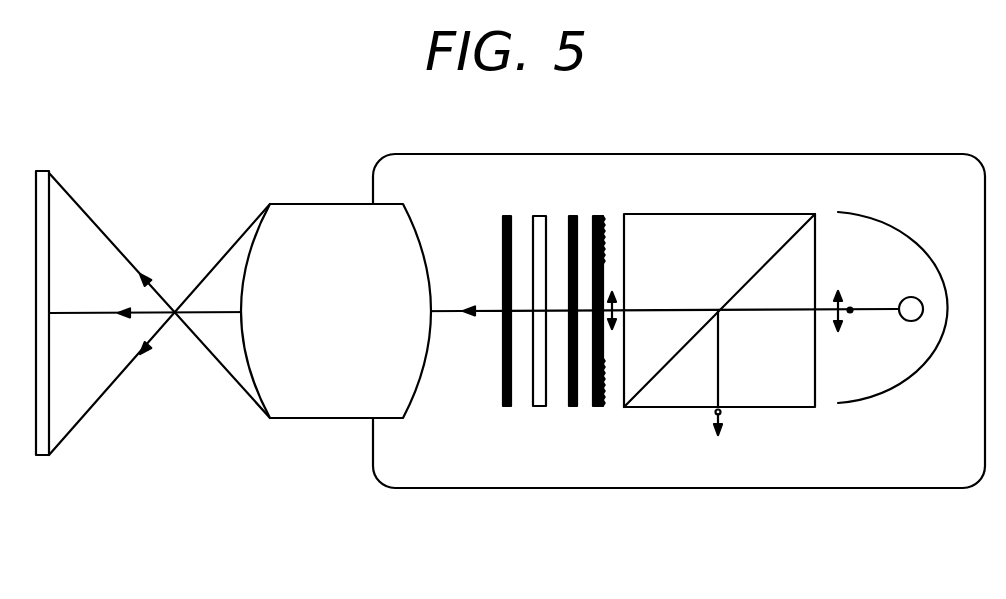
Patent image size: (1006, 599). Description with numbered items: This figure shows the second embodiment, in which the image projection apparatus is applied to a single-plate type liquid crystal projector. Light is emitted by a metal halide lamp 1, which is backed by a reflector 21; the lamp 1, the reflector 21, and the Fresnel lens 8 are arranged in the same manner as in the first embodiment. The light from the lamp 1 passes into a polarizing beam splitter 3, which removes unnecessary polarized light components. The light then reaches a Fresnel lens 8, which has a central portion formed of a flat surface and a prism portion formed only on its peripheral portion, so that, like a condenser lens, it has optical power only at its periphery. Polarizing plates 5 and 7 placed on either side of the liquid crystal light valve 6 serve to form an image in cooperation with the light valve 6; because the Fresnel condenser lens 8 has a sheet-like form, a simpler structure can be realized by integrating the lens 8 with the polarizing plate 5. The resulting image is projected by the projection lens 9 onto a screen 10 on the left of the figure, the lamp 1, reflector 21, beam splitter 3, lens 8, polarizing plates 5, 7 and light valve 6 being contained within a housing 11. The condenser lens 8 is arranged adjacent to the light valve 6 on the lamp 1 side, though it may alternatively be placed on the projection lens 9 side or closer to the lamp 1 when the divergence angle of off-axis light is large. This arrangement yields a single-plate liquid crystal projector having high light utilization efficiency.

The metal halide lamp 1 is at (916, 320).
The reflector 21 is at (878, 403).
The polarizing beam splitter 3 is at (790, 407).
The polarizing plate 5 is at (573, 406).
The liquid crystal light valve 6 is at (539, 406).
The polarizing plate 7 is at (507, 406).
The Fresnel lens 8 is at (598, 406).
The projection lens 9 is at (294, 418).
The screen 10 is at (40, 455).
The housing 11 is at (682, 488).